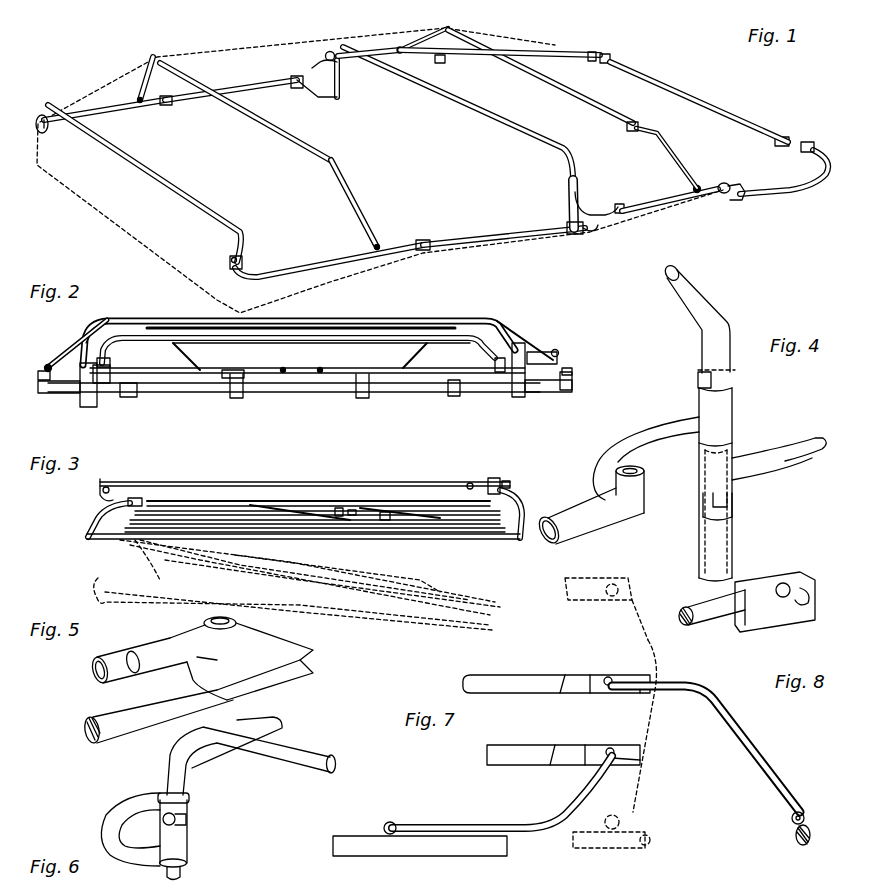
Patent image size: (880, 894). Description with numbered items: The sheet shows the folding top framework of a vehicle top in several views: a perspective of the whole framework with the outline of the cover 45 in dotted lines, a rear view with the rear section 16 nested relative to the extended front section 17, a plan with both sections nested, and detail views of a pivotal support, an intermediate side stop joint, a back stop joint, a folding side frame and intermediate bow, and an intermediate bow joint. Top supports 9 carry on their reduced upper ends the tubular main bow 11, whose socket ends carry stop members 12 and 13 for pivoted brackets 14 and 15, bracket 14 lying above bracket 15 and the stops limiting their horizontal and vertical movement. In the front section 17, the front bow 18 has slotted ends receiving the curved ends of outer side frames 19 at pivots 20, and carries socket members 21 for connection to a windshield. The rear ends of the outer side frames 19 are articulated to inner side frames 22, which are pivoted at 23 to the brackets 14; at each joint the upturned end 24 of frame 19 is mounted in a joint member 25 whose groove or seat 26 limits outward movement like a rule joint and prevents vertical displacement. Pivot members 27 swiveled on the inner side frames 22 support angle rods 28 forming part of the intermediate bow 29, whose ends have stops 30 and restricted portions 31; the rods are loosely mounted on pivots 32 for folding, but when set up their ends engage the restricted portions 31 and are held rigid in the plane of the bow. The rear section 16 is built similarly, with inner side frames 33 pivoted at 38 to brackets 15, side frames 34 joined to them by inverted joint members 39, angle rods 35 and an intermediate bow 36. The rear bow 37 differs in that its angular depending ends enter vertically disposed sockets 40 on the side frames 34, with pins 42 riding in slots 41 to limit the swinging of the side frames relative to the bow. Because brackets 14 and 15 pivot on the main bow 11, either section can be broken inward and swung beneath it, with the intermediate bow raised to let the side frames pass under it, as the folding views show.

In FIG. 4, the top support 9 is at (700, 548).
In FIG. 1, the main bow 11 is at (440, 107).
In FIG. 2, the main bow 11 is at (168, 318).
In FIG. 3, the main bow 11 is at (368, 537).
In FIG. 4, the main bow 11 is at (703, 337).
In FIG. 2, the stop member 12 is at (88, 336).
In FIG. 4, the stop member 12 is at (698, 382).
In FIG. 2, the stop member 13 is at (518, 398).
In FIG. 4, the stop member 13 is at (733, 514).
In FIG. 1, the pivoted bracket 14 is at (316, 58).
In FIG. 2, the pivoted bracket 14 is at (90, 405).
In FIG. 3, the pivoted bracket 14 is at (95, 515).
In FIG. 4, the pivoted bracket 14 is at (660, 424).
In FIG. 1, the pivoted bracket 15 is at (318, 99).
In FIG. 2, the pivoted bracket 15 is at (130, 397).
In FIG. 3, the pivoted bracket 15 is at (100, 537).
In FIG. 4, the pivoted bracket 15 is at (802, 460).
In FIG. 1, the rear section of the top 16 is at (235, 160).
In FIG. 1, the front section of the top 17 is at (561, 124).
In FIG. 1, the front bow 18 is at (706, 97).
In FIG. 3, the front bow 18 is at (268, 519).
In FIG. 1, the outer side frame 19 is at (522, 48).
In FIG. 2, the outer side frame 19 is at (60, 396).
In FIG. 3, the outer side frame 19 is at (143, 481).
In FIG. 5, the outer side frame 19 is at (85, 733).
In FIG. 1, the pivotal connection 20 is at (604, 55).
In FIG. 3, the pivotal connection 20 is at (507, 480).
In FIG. 1, the socket member 21 is at (595, 63).
In FIG. 3, the socket member 21 is at (492, 478).
In FIG. 1, the inner side frame 22 is at (358, 62).
In FIG. 3, the inner side frame 22 is at (320, 510).
In FIG. 4, the inner side frame 22 is at (598, 524).
In FIG. 5, the inner side frame 22 is at (92, 676).
In FIG. 7, the inner side frame 22 is at (508, 846).
In FIG. 1, the pivotal connection 23 is at (330, 51).
In FIG. 2, the pivotal connection 23 is at (560, 353).
In FIG. 3, the pivotal connection 23 is at (118, 480).
In FIG. 4, the pivotal connection 23 is at (645, 470).
In FIG. 1, the upturned end 24 is at (726, 183).
In FIG. 3, the upturned end 24 is at (340, 507).
In FIG. 5, the upturned end 24 is at (203, 620).
In FIG. 1, the joint member 25 is at (445, 65).
In FIG. 2, the joint member 25 is at (42, 385).
In FIG. 3, the joint member 25 is at (352, 508).
In FIG. 5, the joint member 25 is at (227, 668).
In FIG. 1, the groove or seat 26 is at (740, 204).
In FIG. 2, the groove or seat 26 is at (236, 369).
In FIG. 5, the groove or seat 26 is at (313, 665).
In FIG. 1, the pivot member 27 is at (397, 48).
In FIG. 2, the pivot member 27 is at (50, 362).
In FIG. 3, the pivot member 27 is at (320, 537).
In FIG. 7, the pivot member 27 is at (790, 819).
In FIG. 1, the angle rod 28 is at (450, 29).
In FIG. 2, the angle rod 28 is at (527, 330).
In FIG. 3, the angle rod 28 is at (250, 505).
In FIG. 7, the angle rod 28 is at (658, 716).
In FIG. 8, the angle rod 28 is at (716, 613).
In FIG. 1, the intermediate bow 29 is at (540, 90).
In FIG. 2, the intermediate bow 29 is at (425, 326).
In FIG. 3, the intermediate bow 29 is at (198, 500).
In FIG. 7, the intermediate bow 29 is at (547, 676).
In FIG. 7, the stop 30 is at (584, 693).
In FIG. 8, the stop 30 is at (805, 607).
In FIG. 7, the contracted or restricted portion 31 is at (621, 693).
In FIG. 8, the contracted or restricted portion 31 is at (748, 632).
In FIG. 1, the pivot 32 is at (633, 132).
In FIG. 3, the pivot 32 is at (168, 498).
In FIG. 7, the pivot 32 is at (607, 676).
In FIG. 8, the pivot 32 is at (783, 582).
In FIG. 1, the inner side frame 33 is at (250, 87).
In FIG. 2, the inner side frame 33 is at (193, 393).
In FIG. 3, the inner side frame 33 is at (170, 568).
In FIG. 1, the side frame 34 is at (113, 110).
In FIG. 2, the side frame 34 is at (155, 362).
In FIG. 3, the side frame 34 is at (200, 533).
In FIG. 6, the side frame 34 is at (113, 797).
In FIG. 1, the angle rod 35 is at (140, 65).
In FIG. 2, the angle rod 35 is at (200, 352).
In FIG. 3, the angle rod 35 is at (240, 503).
In FIG. 1, the intermediate bow 36 is at (245, 120).
In FIG. 2, the intermediate bow 36 is at (312, 343).
In FIG. 3, the intermediate bow 36 is at (295, 527).
In FIG. 1, the rear bow 37 is at (185, 185).
In FIG. 2, the rear bow 37 is at (390, 335).
In FIG. 3, the rear bow 37 is at (255, 533).
In FIG. 6, the rear bow 37 is at (305, 766).
In FIG. 1, the pivotal connection 38 is at (297, 88).
In FIG. 2, the pivotal connection 38 is at (455, 397).
In FIG. 1, the joint member 39 is at (165, 108).
In FIG. 2, the joint member 39 is at (240, 398).
In FIG. 3, the joint member 39 is at (383, 510).
In FIG. 1, the socket 40 is at (244, 262).
In FIG. 2, the socket 40 is at (103, 383).
In FIG. 6, the socket 40 is at (190, 836).
In FIG. 1, the slot 41 is at (48, 130).
In FIG. 6, the slot 41 is at (192, 805).
In FIG. 1, the pin 42 is at (230, 259).
In FIG. 2, the pin 42 is at (105, 357).
In FIG. 6, the pin 42 is at (163, 820).
In FIG. 1, the cover 45 is at (78, 92).